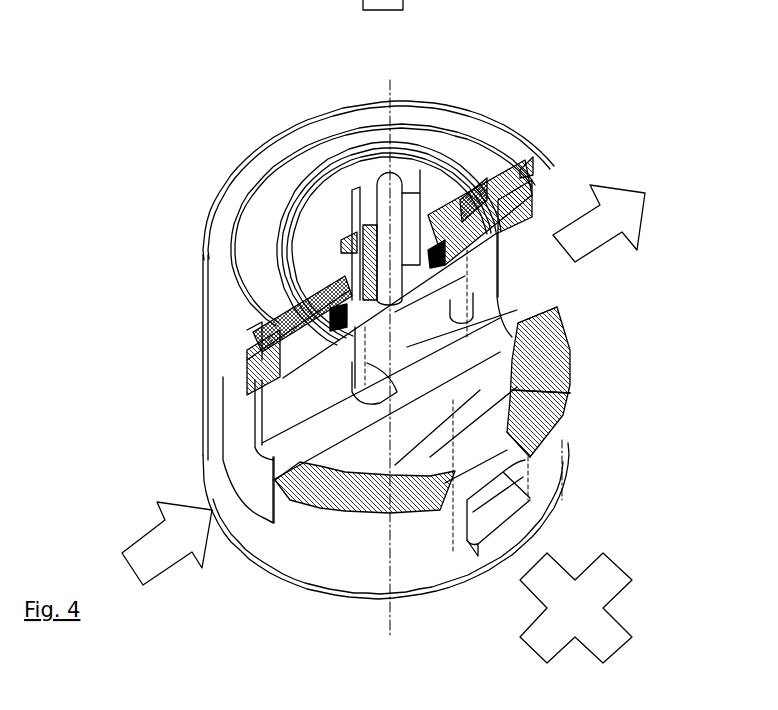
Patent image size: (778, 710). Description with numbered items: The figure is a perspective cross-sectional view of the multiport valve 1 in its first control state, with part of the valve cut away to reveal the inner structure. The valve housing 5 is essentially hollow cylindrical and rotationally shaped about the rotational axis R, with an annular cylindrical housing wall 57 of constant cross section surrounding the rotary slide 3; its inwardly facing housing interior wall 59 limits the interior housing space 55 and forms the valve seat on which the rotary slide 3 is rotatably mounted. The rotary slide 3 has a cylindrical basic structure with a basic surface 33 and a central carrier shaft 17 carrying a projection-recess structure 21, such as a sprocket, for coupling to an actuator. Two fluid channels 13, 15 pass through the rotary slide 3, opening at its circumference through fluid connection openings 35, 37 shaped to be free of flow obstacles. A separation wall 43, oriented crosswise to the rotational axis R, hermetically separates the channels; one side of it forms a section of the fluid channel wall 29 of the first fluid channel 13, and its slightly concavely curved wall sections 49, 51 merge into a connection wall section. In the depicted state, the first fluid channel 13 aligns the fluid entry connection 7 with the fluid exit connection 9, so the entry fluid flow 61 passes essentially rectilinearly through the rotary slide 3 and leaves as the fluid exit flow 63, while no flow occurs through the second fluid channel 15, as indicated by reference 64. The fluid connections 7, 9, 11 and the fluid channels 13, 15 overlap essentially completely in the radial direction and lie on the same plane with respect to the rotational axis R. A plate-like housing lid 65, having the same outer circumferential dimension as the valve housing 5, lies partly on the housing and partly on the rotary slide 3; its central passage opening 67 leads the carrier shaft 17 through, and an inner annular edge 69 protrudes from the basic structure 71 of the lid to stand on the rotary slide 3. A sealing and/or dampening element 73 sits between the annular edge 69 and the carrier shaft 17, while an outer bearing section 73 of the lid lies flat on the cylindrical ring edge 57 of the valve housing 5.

The multiport valve 1 is at (647, 92).
The rotational axis R is at (390, 95).
The rotary slide 3 is at (460, 296).
The valve housing 5 is at (305, 548).
The fluid entry connection 7 is at (233, 443).
The fluid exit connection 9 is at (488, 256).
The fluid connection 11 is at (530, 497).
The first fluid channel 13 is at (297, 405).
The second fluid channel 15 is at (473, 444).
The carrier shaft 17 is at (433, 208).
The projection-recess structure 21 is at (357, 215).
The fluid channel wall 29 is at (290, 384).
The basic surface 33 is at (283, 307).
The fluid connection opening 35 is at (275, 488).
The fluid connection opening 37 is at (510, 337).
The separation wall 43 is at (468, 497).
The curved wall section 49 is at (343, 500).
The curved wall section 51 is at (550, 355).
The interior housing space 55 is at (527, 393).
The housing wall 57 is at (537, 433).
The housing interior wall 59 is at (527, 393).
The entry fluid flow 61 is at (167, 545).
The fluid exit flow 63 is at (630, 208).
The absence of fluid flow through second fluid channel 64 is at (578, 607).
The housing lid 65 is at (293, 298).
The passage opening 67 is at (340, 240).
The inner annular edge 69 is at (533, 195).
The basic structure of the housing lid 71 is at (490, 188).
The sealing and/or dampening element 73 is at (461, 218).